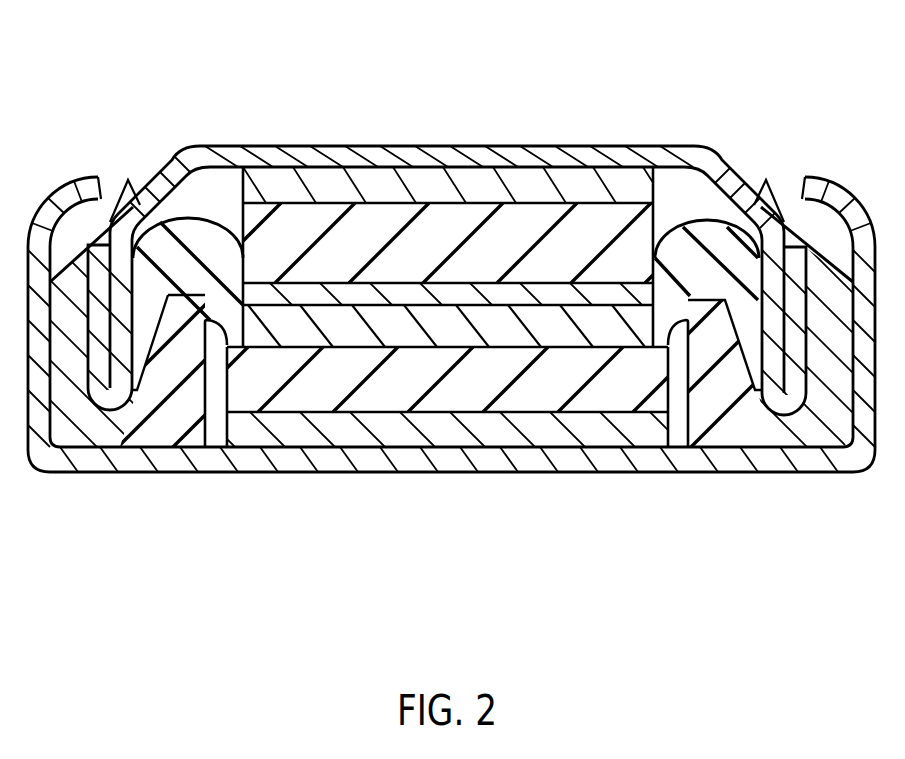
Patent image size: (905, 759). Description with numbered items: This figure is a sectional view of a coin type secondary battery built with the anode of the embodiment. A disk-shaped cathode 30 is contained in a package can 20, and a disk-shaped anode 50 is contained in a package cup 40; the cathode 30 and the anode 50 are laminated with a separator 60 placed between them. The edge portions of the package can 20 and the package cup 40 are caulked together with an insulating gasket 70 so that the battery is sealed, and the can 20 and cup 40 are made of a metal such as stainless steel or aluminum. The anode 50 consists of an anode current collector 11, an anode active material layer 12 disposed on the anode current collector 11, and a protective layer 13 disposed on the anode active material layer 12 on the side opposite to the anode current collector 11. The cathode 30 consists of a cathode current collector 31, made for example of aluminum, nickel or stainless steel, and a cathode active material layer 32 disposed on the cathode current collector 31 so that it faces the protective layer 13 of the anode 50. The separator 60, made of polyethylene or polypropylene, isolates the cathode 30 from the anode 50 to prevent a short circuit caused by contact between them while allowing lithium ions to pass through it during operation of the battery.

The anode current collector 11 is at (360, 188).
The anode active material layer 12 is at (457, 230).
The protective layer 13 is at (330, 82).
The package can 20 is at (302, 457).
The cathode 30 is at (478, 480).
The cathode current collector 31 is at (617, 552).
The cathode active material layer 32 is at (590, 397).
The package cup 40 is at (242, 146).
The anode 50 is at (463, 183).
The separator 60 is at (702, 232).
The insulating gasket 70 is at (157, 435).